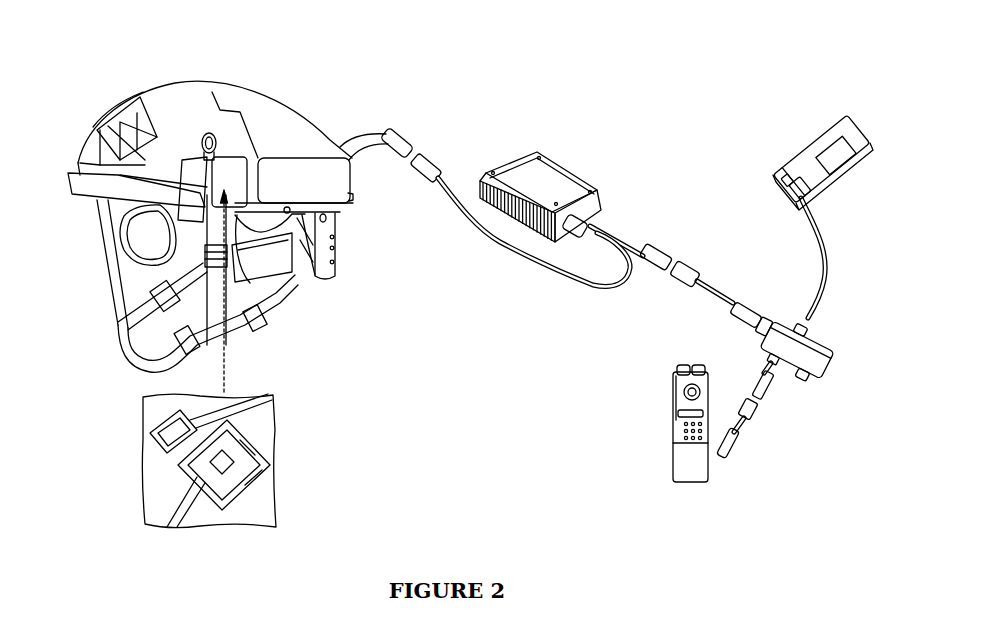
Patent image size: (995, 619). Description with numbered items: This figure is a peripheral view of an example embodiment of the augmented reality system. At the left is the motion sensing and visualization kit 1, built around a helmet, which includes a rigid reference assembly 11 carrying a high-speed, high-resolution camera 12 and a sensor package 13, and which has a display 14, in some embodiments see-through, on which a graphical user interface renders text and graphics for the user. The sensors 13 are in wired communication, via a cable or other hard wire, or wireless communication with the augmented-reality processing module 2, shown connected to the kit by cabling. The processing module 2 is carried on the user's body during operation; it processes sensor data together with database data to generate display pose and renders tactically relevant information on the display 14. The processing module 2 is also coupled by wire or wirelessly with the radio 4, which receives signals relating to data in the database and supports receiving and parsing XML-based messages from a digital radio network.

The motion sensing and visualization kit 1 is at (187, 150).
The augmented-reality processing module 2 is at (543, 160).
The radio 4 is at (690, 470).
The rigid reference assembly 11 is at (275, 156).
The camera 12 is at (210, 128).
The sensor package 13 is at (290, 173).
The display 14 is at (147, 230).